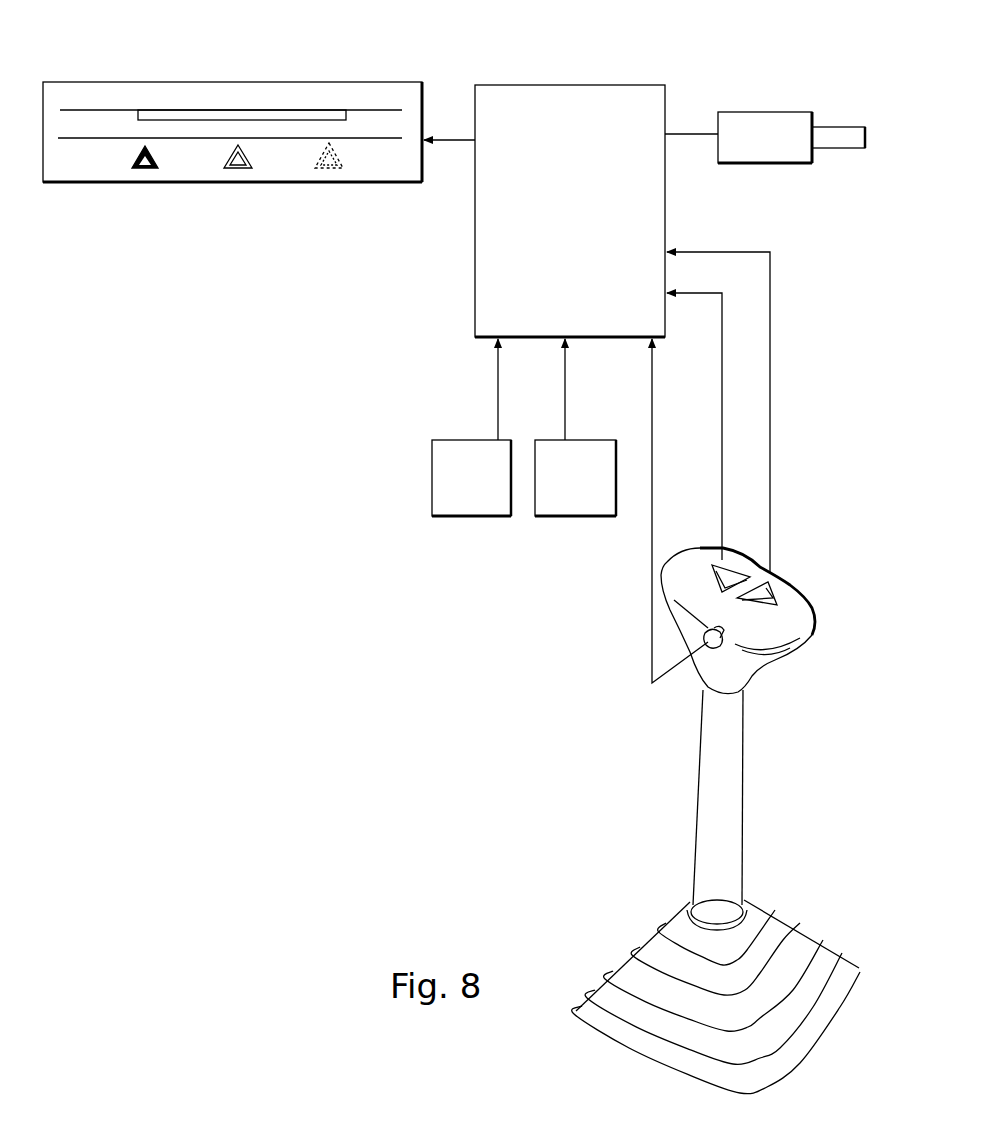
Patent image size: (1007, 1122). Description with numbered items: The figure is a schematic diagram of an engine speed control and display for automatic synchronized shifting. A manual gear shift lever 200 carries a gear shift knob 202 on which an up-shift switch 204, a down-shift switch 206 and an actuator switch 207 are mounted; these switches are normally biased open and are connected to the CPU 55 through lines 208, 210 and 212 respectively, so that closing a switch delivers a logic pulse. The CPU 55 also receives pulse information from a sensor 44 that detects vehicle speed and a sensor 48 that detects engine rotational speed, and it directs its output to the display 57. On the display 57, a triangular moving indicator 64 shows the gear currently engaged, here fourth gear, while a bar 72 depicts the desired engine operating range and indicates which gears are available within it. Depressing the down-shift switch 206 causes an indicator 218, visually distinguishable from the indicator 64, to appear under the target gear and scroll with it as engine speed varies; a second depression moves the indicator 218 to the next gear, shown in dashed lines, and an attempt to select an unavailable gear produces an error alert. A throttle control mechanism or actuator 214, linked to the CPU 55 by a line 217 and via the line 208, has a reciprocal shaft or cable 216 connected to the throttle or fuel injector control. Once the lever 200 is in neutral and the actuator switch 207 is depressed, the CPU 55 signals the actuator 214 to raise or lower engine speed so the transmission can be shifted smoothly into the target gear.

The display screen 57 is at (330, 82).
The bar 72 is at (207, 112).
The moving indicator 64 is at (141, 168).
The indicator 218 is at (233, 170).
The central processing unit 55 is at (608, 84).
The connection line 217 is at (692, 130).
The throttle control mechanism or actuator 214 is at (737, 110).
The reciprocal shaft or cable 216 is at (840, 124).
The sensor 44 is at (432, 498).
The sensor 48 is at (616, 450).
The line 208 is at (722, 345).
The line 210 is at (772, 318).
The line 212 is at (656, 459).
The up-shift switch 204 is at (731, 569).
The down-shift switch 206 is at (764, 592).
The gear shift knob 202 is at (813, 608).
The actuator switch 207 is at (704, 648).
The manual gear shift lever 200 is at (772, 772).